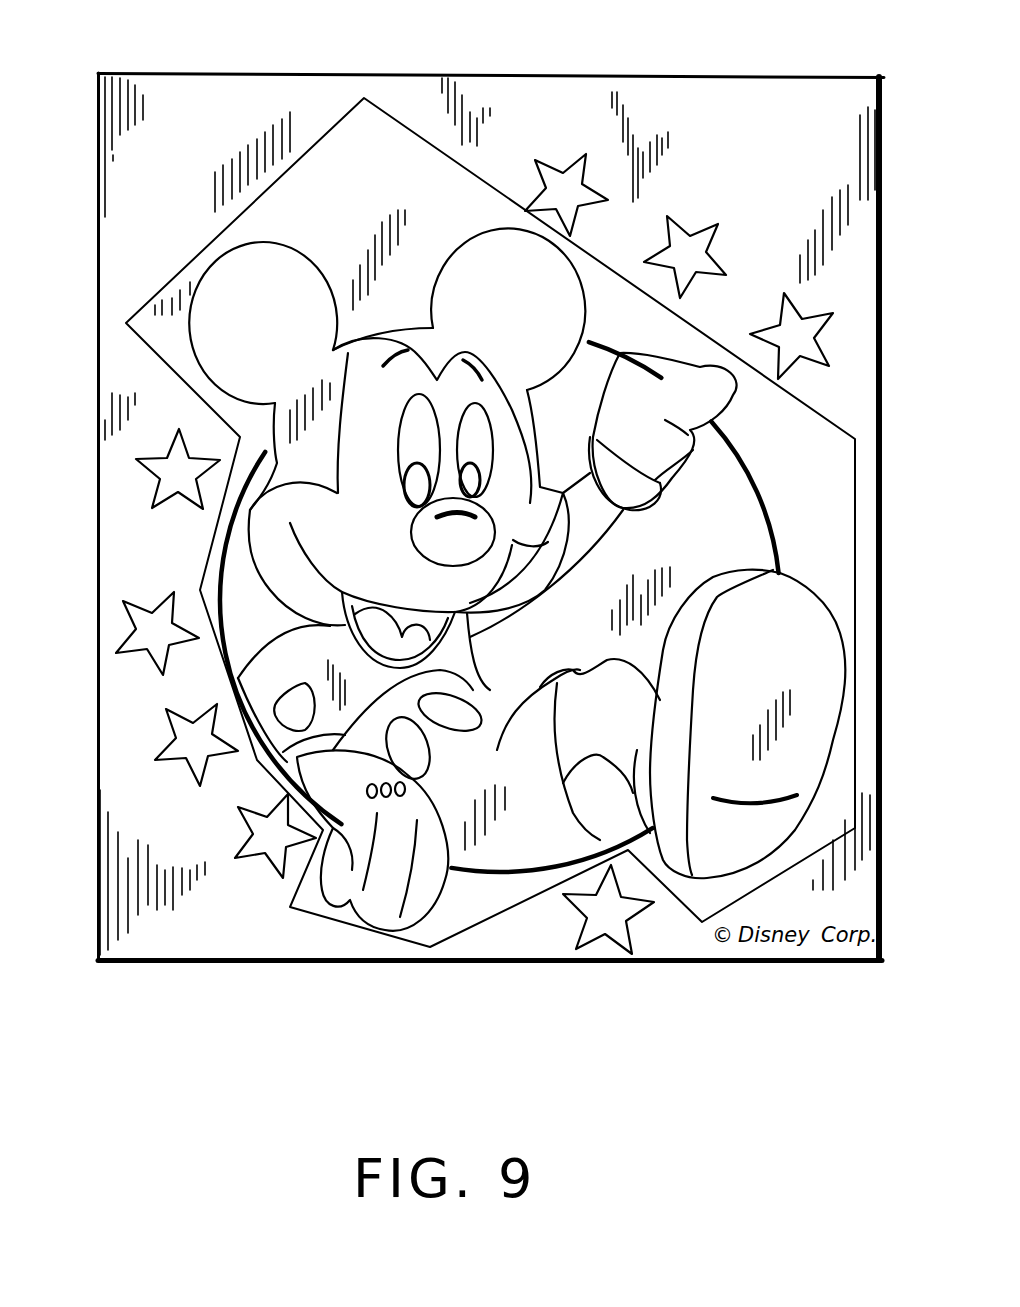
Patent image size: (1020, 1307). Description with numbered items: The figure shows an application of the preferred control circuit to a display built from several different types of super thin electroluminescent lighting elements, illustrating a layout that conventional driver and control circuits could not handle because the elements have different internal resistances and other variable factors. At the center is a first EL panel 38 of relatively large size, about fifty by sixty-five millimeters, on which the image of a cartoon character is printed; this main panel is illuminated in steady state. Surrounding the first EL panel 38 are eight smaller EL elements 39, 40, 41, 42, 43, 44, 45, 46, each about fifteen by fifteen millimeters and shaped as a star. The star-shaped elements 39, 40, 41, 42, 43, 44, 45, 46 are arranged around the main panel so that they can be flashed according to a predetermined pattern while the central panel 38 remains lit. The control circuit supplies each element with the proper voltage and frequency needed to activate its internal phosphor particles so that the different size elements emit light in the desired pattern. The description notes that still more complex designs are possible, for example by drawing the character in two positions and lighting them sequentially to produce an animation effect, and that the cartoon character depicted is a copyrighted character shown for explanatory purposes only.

The first EL panel 38 is at (817, 460).
The smaller EL element 39 is at (140, 455).
The smaller EL element 40 is at (120, 617).
The smaller EL element 41 is at (162, 745).
The smaller EL element 42 is at (255, 870).
The smaller EL element 43 is at (568, 170).
The smaller EL element 44 is at (695, 232).
The smaller EL element 45 is at (802, 305).
The smaller EL element 46 is at (607, 945).